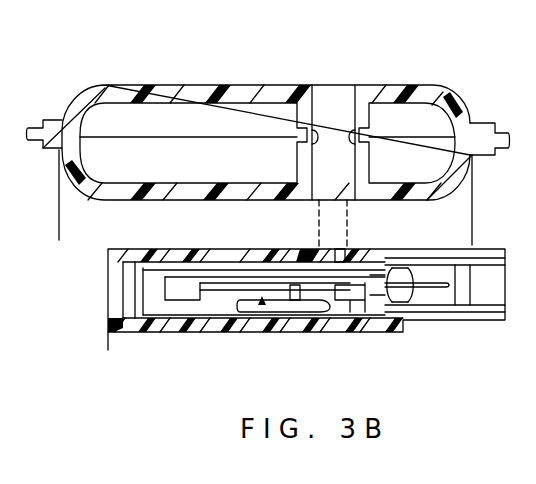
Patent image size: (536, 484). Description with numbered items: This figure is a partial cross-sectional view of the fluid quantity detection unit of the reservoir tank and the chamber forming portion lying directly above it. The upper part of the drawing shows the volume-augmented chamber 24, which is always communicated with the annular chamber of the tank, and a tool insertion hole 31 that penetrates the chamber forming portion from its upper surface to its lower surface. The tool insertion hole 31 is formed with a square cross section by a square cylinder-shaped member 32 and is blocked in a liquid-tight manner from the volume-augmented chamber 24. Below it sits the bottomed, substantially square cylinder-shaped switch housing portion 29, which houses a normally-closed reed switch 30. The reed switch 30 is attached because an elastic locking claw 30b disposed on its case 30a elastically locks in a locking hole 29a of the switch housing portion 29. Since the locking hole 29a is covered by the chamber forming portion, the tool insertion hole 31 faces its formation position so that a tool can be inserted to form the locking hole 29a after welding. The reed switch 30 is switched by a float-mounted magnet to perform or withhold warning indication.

The volume-augmented chamber 24 is at (165, 128).
The switch housing portion 29 is at (112, 302).
The locking hole 29a is at (318, 240).
The reed switch 30 is at (257, 334).
The case 30a is at (443, 320).
The elastic locking claw 30b is at (343, 246).
The tool insertion hole 31 is at (351, 113).
The square cylinder-shaped member 32 is at (365, 167).